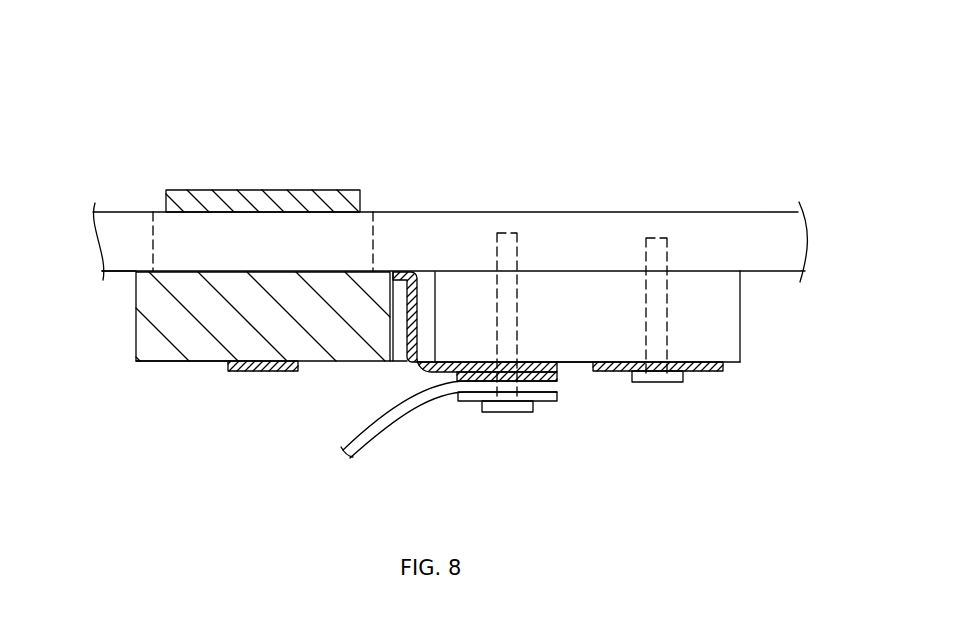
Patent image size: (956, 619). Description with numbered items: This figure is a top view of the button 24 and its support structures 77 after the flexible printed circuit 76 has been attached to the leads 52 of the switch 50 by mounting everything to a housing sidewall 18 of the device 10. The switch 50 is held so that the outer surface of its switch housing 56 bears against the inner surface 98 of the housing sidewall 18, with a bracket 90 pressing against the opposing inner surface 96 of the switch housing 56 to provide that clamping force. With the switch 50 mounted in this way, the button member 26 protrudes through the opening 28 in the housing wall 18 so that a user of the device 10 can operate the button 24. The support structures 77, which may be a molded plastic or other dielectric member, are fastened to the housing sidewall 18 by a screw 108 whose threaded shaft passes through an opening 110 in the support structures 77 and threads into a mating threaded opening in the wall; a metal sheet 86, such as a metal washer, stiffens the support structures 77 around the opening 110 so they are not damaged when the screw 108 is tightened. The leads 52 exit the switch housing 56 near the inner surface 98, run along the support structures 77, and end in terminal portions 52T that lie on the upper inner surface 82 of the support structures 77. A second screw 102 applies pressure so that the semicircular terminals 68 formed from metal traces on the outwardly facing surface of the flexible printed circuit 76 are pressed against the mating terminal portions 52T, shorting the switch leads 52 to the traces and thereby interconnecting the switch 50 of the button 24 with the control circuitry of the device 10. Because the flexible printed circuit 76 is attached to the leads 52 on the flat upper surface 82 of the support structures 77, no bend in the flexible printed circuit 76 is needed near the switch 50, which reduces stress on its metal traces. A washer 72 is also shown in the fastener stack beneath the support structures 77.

The device 10 is at (688, 58).
The housing sidewall 18 is at (410, 217).
The button 24 is at (249, 164).
The button member 26 is at (325, 198).
The opening 28 is at (152, 230).
The switch 50 is at (157, 380).
The leads 52 is at (412, 360).
The terminal portions 52T is at (538, 363).
The switch housing 56 is at (135, 340).
The terminals 68 is at (557, 378).
The washer 72 is at (550, 398).
The flexible printed circuit 76 is at (367, 428).
The support structures 77 is at (740, 327).
The inner surface 82 is at (583, 365).
The metal sheet 86 is at (712, 372).
The bracket 90 is at (258, 372).
The inner surface 96 is at (202, 363).
The inner surface 98 is at (115, 272).
The screw 102 is at (502, 408).
The screw 108 is at (653, 382).
The opening 110 is at (667, 288).